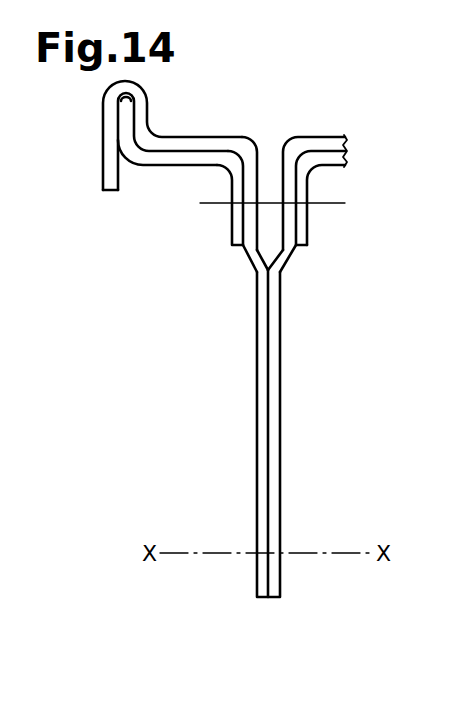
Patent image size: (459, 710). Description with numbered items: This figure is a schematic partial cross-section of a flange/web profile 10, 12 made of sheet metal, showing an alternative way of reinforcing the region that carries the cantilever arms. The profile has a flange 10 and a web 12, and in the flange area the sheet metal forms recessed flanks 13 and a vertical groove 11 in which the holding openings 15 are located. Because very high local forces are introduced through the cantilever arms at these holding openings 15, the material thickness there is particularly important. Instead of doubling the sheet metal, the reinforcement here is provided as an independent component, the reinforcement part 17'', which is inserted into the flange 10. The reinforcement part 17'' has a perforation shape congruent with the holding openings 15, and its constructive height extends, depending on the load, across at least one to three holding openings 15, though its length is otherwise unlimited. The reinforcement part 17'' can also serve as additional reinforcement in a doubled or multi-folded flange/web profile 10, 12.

The flange 10 is at (110, 113).
The vertical groove 11 is at (272, 160).
The web 12 is at (273, 402).
The recessed flank 13 is at (188, 122).
The holding opening 15 is at (291, 205).
The reinforcement part 17'' is at (167, 189).